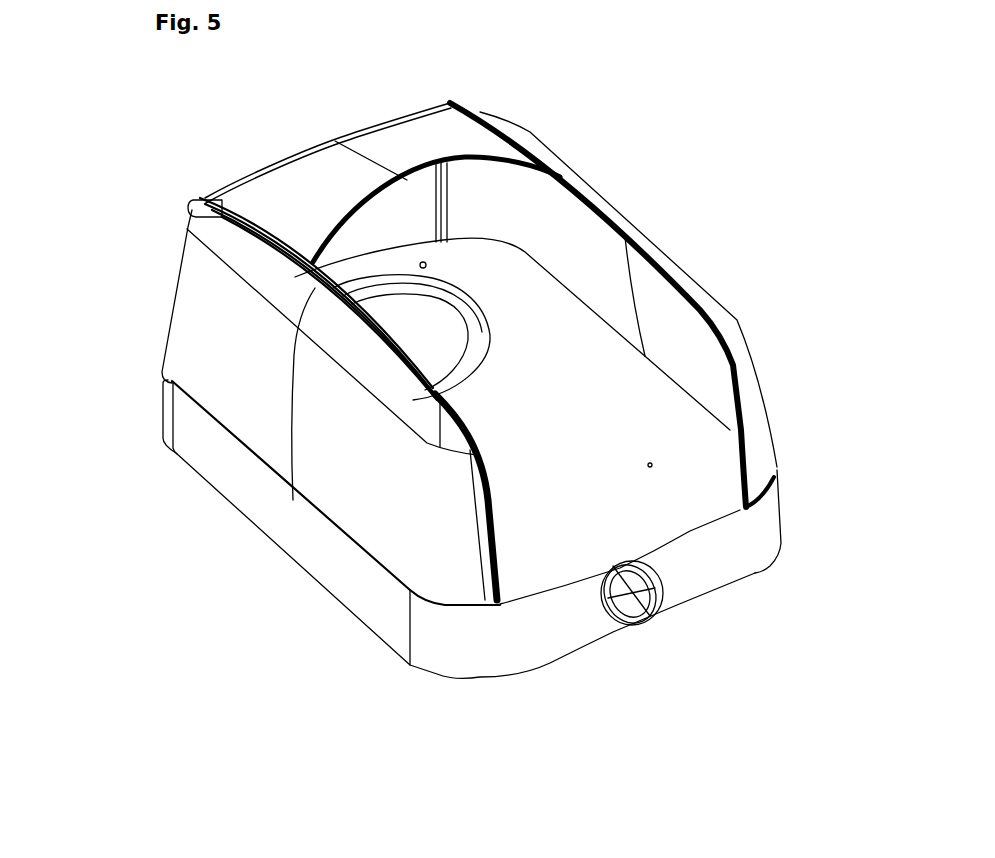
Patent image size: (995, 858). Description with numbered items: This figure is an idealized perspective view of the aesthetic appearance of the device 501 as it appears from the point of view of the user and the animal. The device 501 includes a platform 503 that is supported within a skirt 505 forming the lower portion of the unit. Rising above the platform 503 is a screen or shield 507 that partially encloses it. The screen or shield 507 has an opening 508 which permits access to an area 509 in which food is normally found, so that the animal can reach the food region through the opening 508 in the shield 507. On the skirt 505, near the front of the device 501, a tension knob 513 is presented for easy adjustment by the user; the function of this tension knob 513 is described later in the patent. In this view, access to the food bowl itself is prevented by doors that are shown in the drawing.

The device 501 is at (208, 324).
The platform 503 is at (703, 503).
The skirt 505 is at (279, 515).
The screen or shield 507 is at (313, 176).
The opening 508 is at (483, 195).
The area 509 is at (486, 314).
The tension knob 513 is at (600, 614).